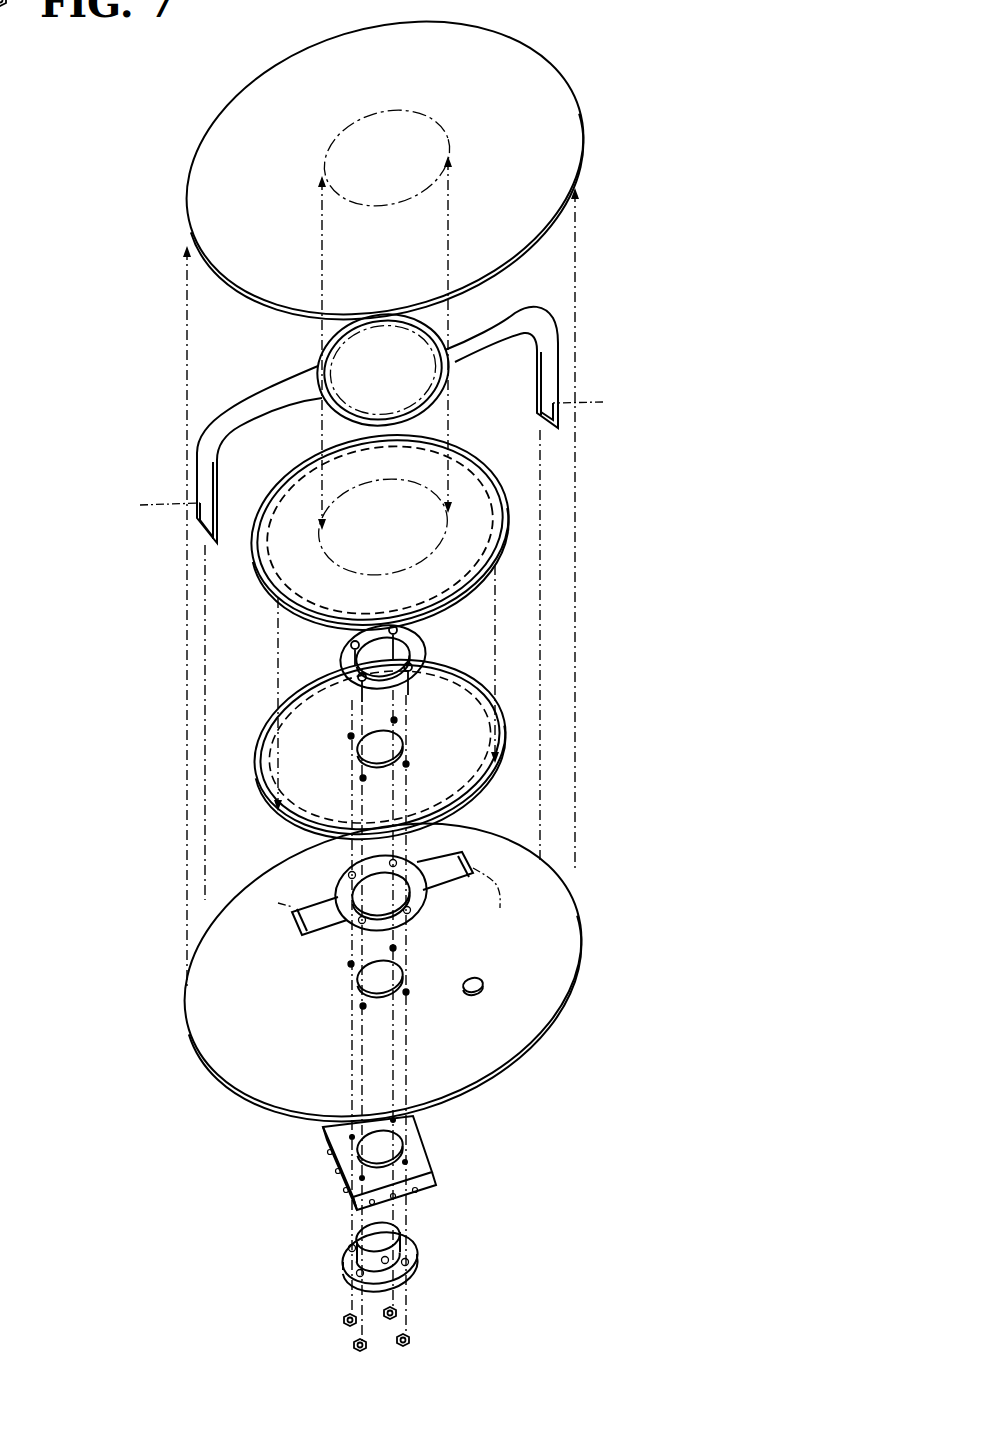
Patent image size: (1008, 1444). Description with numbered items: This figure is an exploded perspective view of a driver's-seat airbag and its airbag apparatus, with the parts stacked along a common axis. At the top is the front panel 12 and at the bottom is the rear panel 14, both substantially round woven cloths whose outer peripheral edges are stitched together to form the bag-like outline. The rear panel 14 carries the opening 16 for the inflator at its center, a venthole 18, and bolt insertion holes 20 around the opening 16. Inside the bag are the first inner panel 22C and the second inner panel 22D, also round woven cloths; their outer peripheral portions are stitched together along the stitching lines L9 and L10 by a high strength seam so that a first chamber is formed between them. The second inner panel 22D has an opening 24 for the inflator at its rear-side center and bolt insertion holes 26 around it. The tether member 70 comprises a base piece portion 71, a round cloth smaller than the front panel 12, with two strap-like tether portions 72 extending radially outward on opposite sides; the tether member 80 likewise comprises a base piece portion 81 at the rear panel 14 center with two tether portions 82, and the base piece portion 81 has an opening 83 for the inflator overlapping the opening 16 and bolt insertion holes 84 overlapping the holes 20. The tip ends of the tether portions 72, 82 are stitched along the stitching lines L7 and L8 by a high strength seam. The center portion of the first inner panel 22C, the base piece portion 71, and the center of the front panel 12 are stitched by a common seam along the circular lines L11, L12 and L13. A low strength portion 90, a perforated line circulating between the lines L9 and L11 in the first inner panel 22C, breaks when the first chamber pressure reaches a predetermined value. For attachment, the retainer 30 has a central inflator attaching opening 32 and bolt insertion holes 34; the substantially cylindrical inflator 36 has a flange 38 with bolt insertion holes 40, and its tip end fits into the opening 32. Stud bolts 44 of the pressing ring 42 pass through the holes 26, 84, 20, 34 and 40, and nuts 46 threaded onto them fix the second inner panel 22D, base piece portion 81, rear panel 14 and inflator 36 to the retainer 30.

The front panel 12 is at (532, 70).
The rear panel 14 is at (247, 1072).
The opening for the inflator 16 is at (367, 988).
The venthole 18 is at (483, 985).
The bolt insertion hole 20 is at (410, 993).
The first inner panel 22C is at (478, 513).
The second inner panel 22D is at (510, 738).
The opening for the inflator 24 is at (377, 757).
The bolt insertion hole 26 is at (410, 765).
The retainer 30 is at (407, 1155).
The inflator attaching opening 32 is at (385, 1143).
The bolt insertion hole 34 is at (323, 1138).
The inflator 36 is at (390, 1235).
The flange 38 is at (412, 1247).
The bolt insertion hole 40 is at (350, 1247).
The pressing ring 42 is at (413, 648).
The stud bolt 44 is at (410, 690).
The nut 46 is at (354, 1345).
The tether member 70 is at (408, 392).
The base piece portion 71 is at (445, 368).
The tether portion 72 is at (213, 435).
The tether member 80 is at (441, 884).
The base piece portion 81 is at (340, 885).
The tether portion 82 is at (468, 853).
The opening for the inflator 83 is at (410, 910).
The bolt insertion hole 84 is at (492, 868).
The low strength portion 90 is at (340, 600).
The stitching line L7 is at (370, 447).
The stitching line L8 is at (379, 899).
The stitching line L9 is at (280, 493).
The stitching line L10 is at (273, 715).
The stitching line L11 is at (333, 553).
The stitching line L12 is at (332, 392).
The stitching line L13 is at (335, 187).